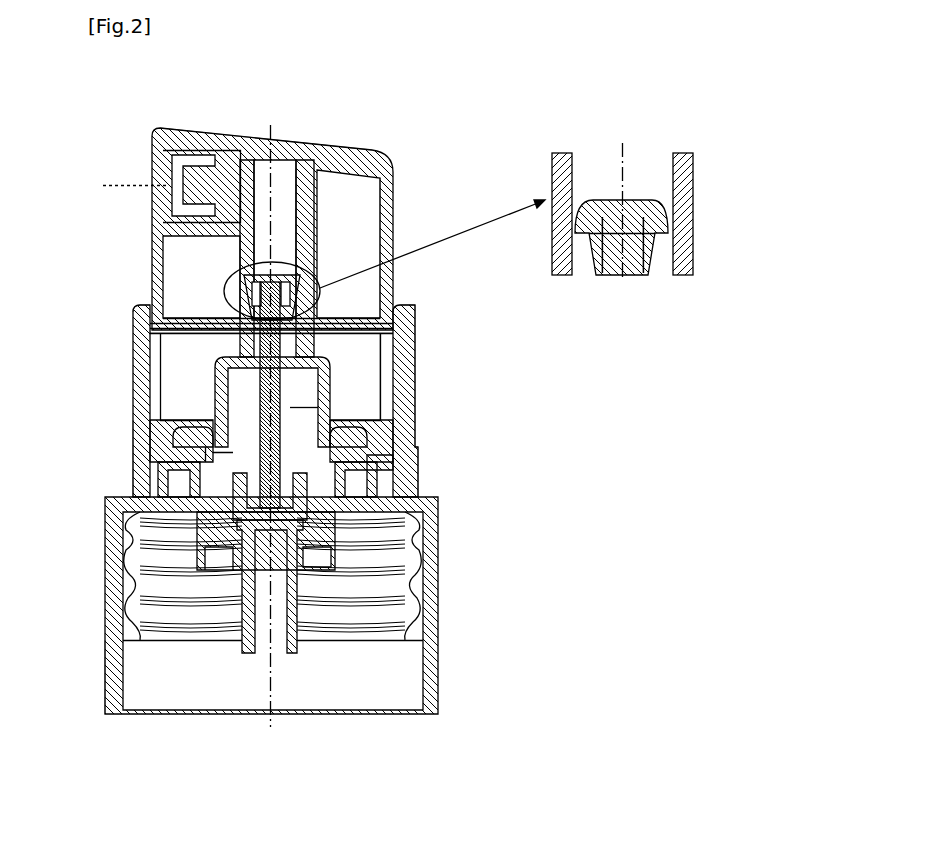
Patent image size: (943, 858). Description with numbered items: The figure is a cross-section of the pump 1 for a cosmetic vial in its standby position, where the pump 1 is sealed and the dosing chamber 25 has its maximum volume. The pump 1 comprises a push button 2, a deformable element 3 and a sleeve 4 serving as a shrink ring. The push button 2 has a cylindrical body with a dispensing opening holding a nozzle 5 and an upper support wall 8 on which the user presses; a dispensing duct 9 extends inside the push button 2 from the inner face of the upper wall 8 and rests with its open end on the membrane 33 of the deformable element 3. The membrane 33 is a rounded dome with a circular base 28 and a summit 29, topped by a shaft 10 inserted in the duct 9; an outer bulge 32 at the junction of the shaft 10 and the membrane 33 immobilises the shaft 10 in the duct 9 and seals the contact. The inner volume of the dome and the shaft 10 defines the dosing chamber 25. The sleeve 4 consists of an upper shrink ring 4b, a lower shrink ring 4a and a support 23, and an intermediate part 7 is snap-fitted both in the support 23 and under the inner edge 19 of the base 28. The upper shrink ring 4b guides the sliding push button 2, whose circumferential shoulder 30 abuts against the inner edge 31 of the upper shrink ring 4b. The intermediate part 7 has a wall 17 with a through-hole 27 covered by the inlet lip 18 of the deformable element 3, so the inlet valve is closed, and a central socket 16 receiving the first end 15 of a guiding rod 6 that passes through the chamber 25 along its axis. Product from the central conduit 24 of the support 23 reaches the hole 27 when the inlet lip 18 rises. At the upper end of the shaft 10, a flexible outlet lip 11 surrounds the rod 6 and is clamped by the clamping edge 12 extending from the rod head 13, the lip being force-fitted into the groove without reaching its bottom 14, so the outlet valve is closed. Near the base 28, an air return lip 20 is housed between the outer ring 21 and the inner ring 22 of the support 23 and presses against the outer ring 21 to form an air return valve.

The pump 1 is at (120, 118).
The push button 2 is at (153, 258).
The deformable element 3 is at (212, 382).
The sleeve 4 is at (185, 588).
The lower shrink ring 4a is at (107, 688).
The upper shrink ring 4b is at (130, 434).
The nozzle 5 is at (155, 180).
The rod 6 is at (255, 402).
The intermediate part 7 is at (205, 522).
The upper support wall 8 is at (333, 150).
The dispensing duct 9 is at (315, 207).
The shaft 10 is at (245, 342).
The outlet lip 11 is at (598, 253).
The clamping edge 12 is at (667, 213).
The rod head 13 is at (640, 200).
The bottom of the groove 14 is at (592, 198).
The first end of the rod 15 is at (420, 510).
The central socket 16 is at (410, 540).
The wall 17 is at (385, 462).
The inlet lip 18 is at (335, 390).
The inner edge 19 is at (418, 490).
The air return lip 20 is at (375, 455).
The outer ring 21 is at (225, 480).
The inner ring 22 is at (240, 445).
The support 23 is at (190, 558).
The central conduit 24 is at (250, 632).
The dosing chamber 25 is at (289, 395).
The through-hole 27 is at (235, 462).
The base 28 is at (372, 443).
The summit 29 is at (415, 328).
The circumferential shoulder 30 is at (413, 307).
The inner edge 31 is at (410, 310).
The outer bulge 32 is at (245, 325).
The membrane 33 is at (413, 358).